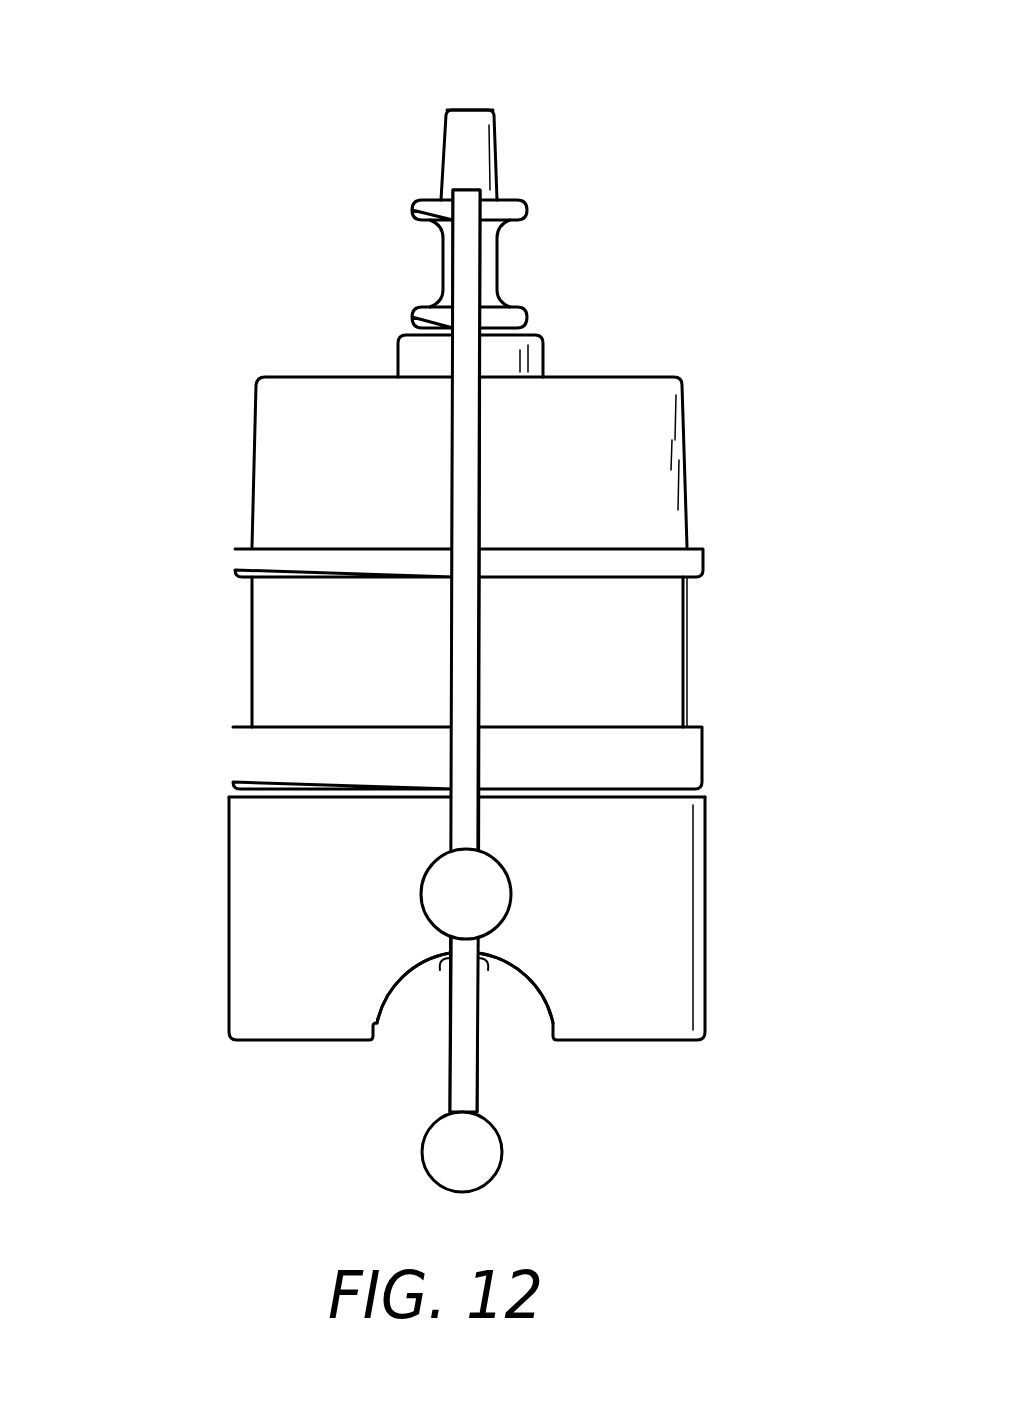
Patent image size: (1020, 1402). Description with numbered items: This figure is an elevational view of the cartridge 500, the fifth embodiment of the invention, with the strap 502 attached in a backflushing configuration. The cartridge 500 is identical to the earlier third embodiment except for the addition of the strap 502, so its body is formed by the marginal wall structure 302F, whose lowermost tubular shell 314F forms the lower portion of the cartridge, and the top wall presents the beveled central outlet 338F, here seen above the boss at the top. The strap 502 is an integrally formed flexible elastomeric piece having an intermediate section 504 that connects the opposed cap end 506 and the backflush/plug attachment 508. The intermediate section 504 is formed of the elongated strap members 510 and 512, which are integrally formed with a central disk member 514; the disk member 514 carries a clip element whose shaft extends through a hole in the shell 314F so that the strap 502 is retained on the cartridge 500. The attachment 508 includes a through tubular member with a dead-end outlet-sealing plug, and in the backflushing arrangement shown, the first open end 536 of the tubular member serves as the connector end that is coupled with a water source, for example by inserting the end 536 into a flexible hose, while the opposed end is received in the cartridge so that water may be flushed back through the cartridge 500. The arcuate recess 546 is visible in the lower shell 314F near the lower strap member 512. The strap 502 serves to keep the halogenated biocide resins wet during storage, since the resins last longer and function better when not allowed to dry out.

The cartridge 500 is at (613, 380).
The strap 502 is at (528, 205).
The intermediate section 504 is at (470, 660).
The cap end 506 is at (498, 1157).
The backflush/plug attachment 508 is at (493, 108).
The elongated strap member 510 is at (470, 485).
The elongated strap member 512 is at (465, 1063).
The central disk member 514 is at (478, 888).
The first open end 536 is at (447, 110).
The arcuate recess 546 is at (530, 987).
The marginal wall structure 302F is at (338, 458).
The lowermost tubular shell 314F is at (335, 887).
The beveled central outlet 338F is at (523, 365).